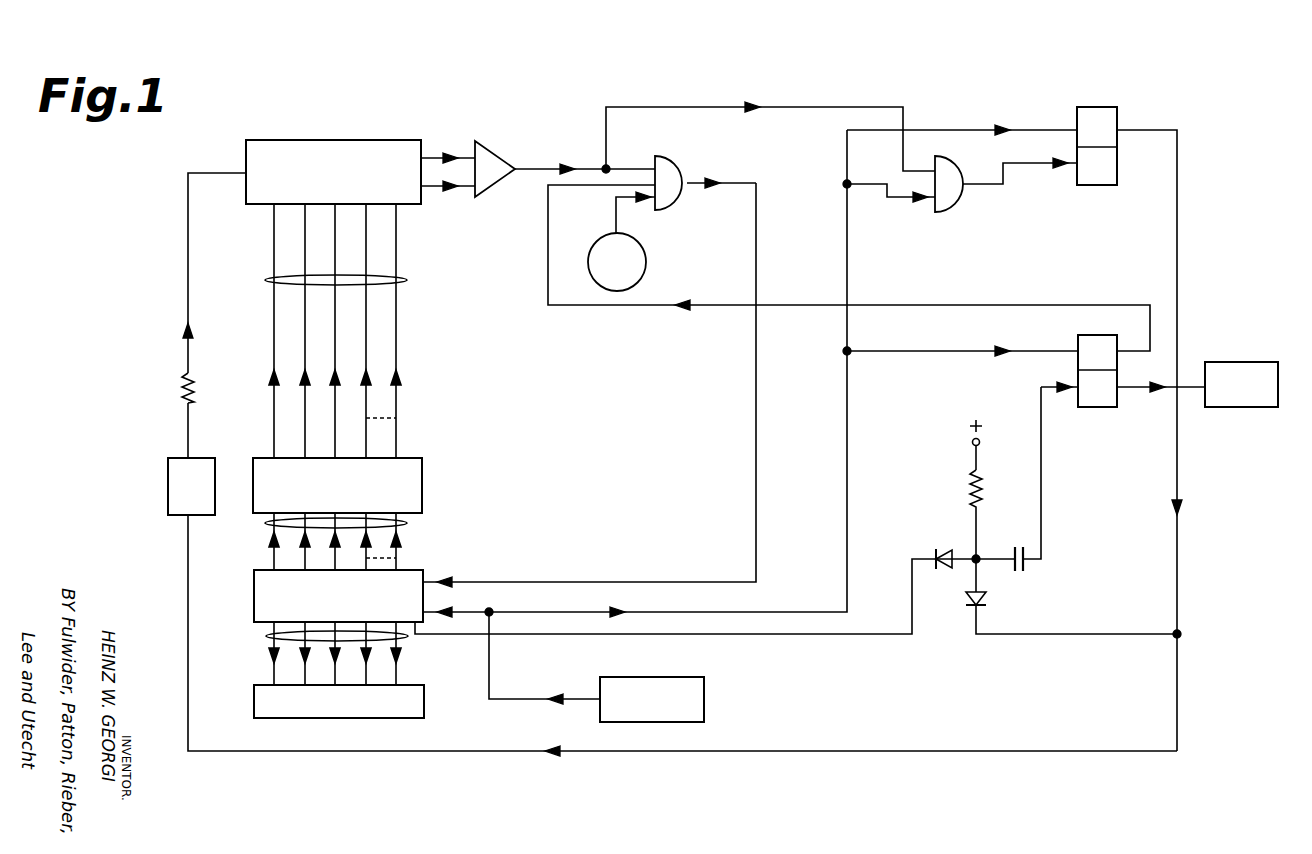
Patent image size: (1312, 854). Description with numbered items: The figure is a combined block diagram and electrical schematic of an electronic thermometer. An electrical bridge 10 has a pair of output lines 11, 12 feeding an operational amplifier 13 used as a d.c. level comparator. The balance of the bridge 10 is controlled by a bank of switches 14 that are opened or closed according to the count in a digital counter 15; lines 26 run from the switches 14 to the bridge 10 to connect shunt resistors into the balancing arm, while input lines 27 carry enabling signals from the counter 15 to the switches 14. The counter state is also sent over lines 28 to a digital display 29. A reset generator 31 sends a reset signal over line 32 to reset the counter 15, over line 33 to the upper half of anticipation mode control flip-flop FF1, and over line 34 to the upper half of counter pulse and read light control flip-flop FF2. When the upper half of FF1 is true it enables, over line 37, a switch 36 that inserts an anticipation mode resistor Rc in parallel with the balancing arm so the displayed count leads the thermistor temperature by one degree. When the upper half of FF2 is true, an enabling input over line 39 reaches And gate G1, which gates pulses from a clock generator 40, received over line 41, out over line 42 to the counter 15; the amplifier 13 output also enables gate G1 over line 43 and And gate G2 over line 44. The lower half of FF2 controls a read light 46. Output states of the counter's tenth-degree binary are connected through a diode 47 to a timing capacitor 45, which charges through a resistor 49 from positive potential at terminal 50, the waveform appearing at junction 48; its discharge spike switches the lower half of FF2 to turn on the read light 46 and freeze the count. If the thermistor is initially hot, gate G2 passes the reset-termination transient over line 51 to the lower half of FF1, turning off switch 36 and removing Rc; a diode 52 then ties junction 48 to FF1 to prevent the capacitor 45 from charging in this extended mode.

The electrical bridge 10 is at (341, 140).
The output line 11 is at (432, 150).
The output line 12 is at (428, 196).
The operational amplifier 13 is at (490, 150).
The bank of switches 14 is at (422, 464).
The digital counter 15 is at (430, 572).
The lines 26 is at (408, 280).
The input lines 27 is at (408, 523).
The lines 28 is at (266, 638).
The digital display 29 is at (424, 714).
The reset generator 31 is at (704, 696).
The line 32 is at (458, 612).
The line 33 is at (944, 128).
The line 34 is at (890, 351).
The switch 36 is at (168, 492).
The line 37 is at (188, 640).
The line 39 is at (694, 308).
The clock generator 40 is at (628, 246).
The line 41 is at (616, 208).
The line 42 is at (512, 582).
The line 43 is at (626, 160).
The line 44 is at (776, 107).
The timing capacitor 45 is at (1030, 566).
The read light 46 is at (1226, 362).
The diode 47 is at (942, 548).
The junction 48 is at (978, 552).
The resistor 49 is at (984, 490).
The terminal 50 is at (972, 442).
The line 51 is at (1028, 170).
The diode 52 is at (988, 600).
The anticipation mode control flip-flop FF1 is at (1117, 114).
The counter pulse and read light control flip-flop FF2 is at (1100, 336).
The And gate G1 is at (676, 200).
The And gate G2 is at (950, 204).
The anticipation mode resistor Rc is at (184, 384).